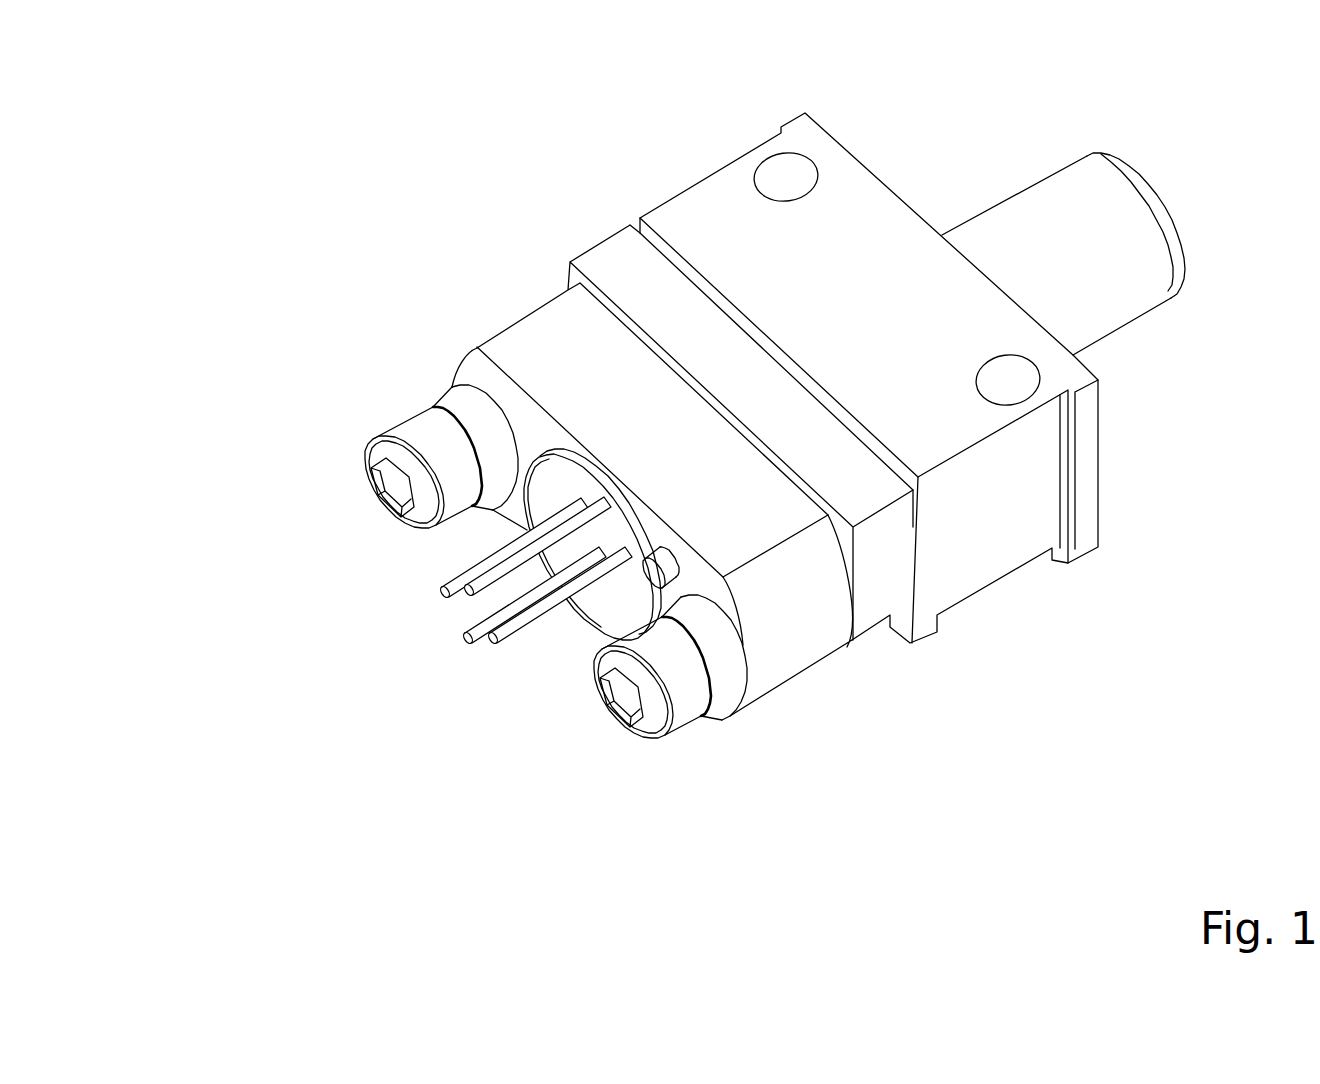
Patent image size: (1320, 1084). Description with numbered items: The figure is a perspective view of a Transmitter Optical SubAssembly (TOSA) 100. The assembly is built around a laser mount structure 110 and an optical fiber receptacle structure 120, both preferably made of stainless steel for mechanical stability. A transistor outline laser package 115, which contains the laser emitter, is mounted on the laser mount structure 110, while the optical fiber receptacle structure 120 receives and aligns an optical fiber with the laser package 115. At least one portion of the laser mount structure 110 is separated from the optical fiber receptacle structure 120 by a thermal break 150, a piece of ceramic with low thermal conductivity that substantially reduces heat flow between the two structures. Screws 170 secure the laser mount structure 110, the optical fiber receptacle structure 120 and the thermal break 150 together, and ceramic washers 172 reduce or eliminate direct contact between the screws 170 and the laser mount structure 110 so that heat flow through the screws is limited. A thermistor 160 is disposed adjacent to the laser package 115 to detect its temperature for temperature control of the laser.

The Transmitter Optical SubAssembly (TOSA) 100 is at (667, 506).
The laser mount structure 110 is at (773, 686).
The transistor outline (TO) laser package 115 is at (431, 634).
The optical fiber receptacle structure 120 is at (997, 590).
The thermal break 150 is at (596, 232).
The thermistor 160 is at (489, 715).
The screws 170 is at (690, 902).
The ceramic washers 172 is at (445, 393).